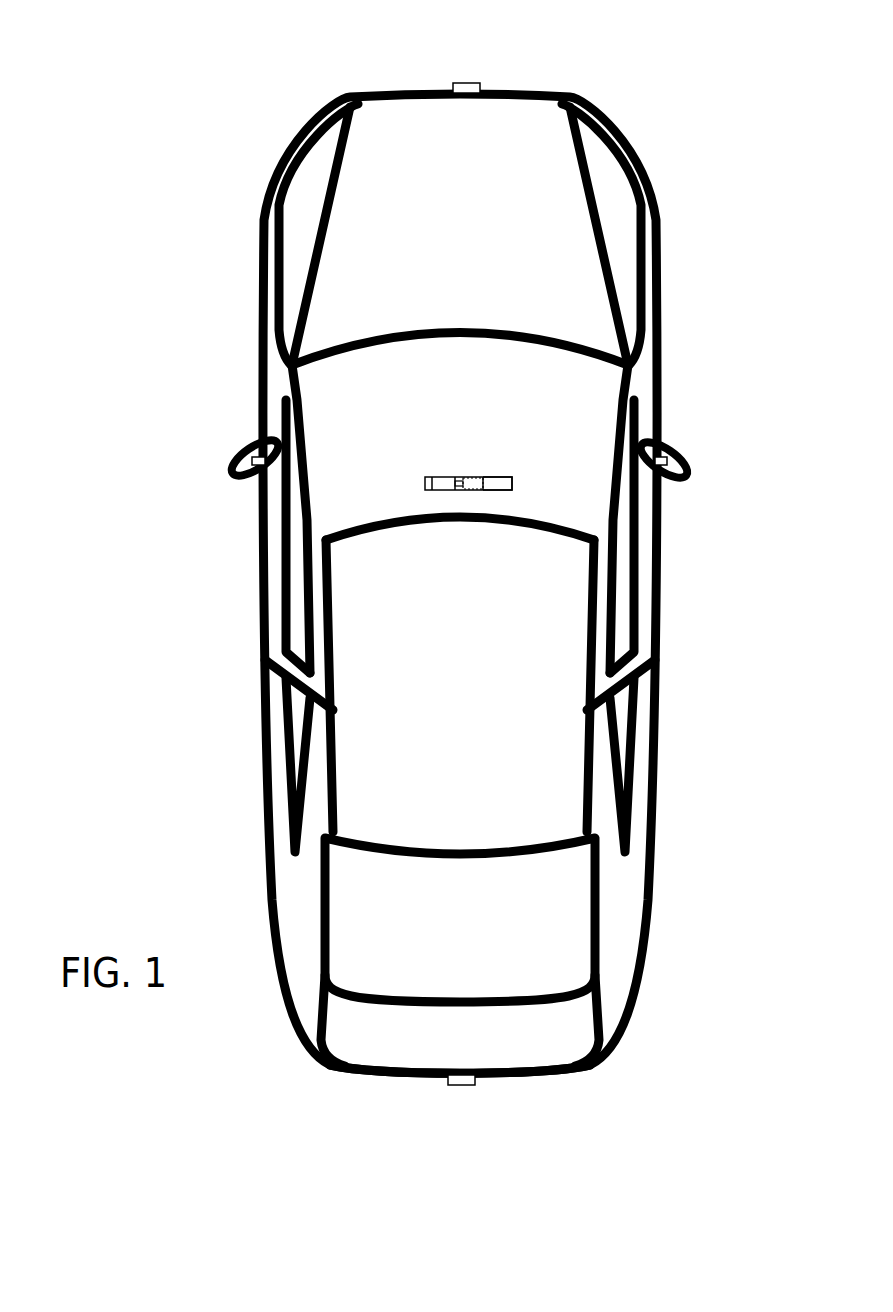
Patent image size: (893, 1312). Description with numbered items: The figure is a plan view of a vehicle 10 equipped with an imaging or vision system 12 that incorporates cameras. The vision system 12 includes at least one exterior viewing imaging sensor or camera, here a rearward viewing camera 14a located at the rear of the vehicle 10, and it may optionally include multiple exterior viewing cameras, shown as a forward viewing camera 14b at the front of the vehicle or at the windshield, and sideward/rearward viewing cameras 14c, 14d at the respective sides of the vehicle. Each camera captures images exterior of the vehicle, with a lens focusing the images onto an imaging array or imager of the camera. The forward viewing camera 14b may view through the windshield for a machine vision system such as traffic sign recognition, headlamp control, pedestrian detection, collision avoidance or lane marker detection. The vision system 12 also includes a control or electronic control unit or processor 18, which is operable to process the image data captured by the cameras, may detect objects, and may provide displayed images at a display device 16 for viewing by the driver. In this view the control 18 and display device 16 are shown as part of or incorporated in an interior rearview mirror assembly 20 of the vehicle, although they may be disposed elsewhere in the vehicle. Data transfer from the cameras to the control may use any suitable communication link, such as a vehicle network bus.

The vehicle 10 is at (212, 187).
The vision system 12 is at (410, 1107).
The rearward viewing camera 14a is at (467, 1083).
The forward viewing camera 14b is at (470, 83).
The sideward/rearward viewing camera 14c is at (253, 460).
The sideward/rearward viewing camera 14d is at (662, 462).
The display device 16 is at (445, 480).
The electronic control unit 18 is at (467, 477).
The interior rearview mirror assembly 20 is at (512, 477).